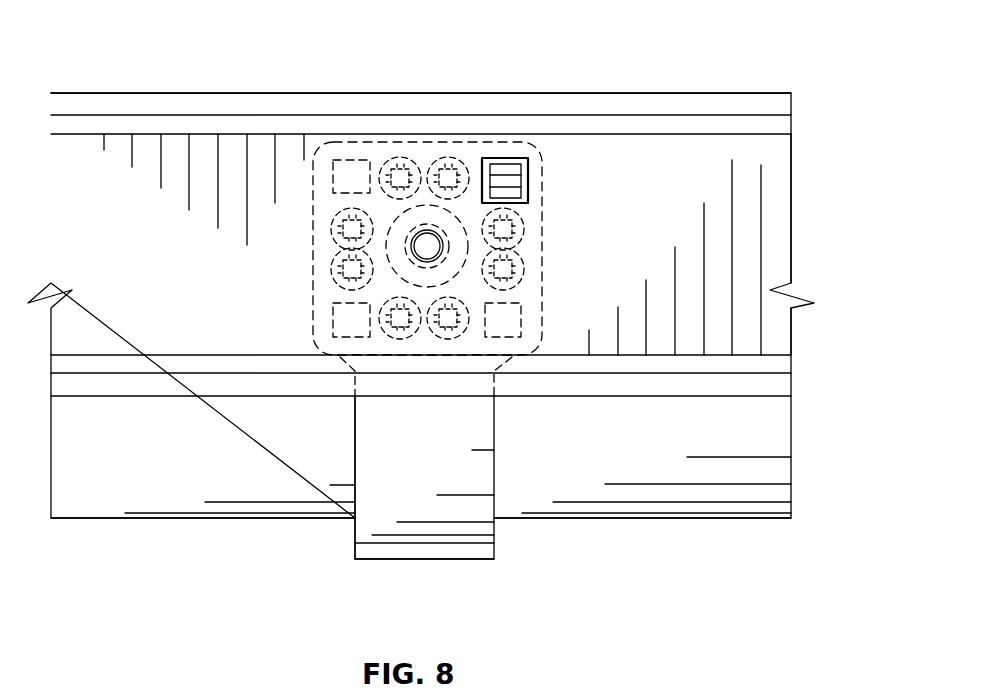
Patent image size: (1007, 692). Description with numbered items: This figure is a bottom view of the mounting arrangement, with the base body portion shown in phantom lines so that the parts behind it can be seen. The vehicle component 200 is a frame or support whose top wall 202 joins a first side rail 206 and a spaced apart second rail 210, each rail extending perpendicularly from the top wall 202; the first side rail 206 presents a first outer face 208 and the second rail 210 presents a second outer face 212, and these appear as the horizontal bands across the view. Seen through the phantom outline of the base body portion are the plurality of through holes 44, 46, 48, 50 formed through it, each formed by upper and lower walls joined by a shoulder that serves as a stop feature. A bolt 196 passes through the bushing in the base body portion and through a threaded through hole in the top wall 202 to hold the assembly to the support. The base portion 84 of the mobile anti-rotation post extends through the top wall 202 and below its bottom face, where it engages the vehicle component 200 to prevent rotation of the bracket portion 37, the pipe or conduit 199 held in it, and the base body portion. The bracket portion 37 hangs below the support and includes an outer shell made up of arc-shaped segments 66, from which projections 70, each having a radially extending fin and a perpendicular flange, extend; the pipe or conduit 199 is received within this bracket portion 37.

The vehicle component 200 is at (780, 93).
The second outer face 212 is at (683, 93).
The second rail 210 is at (782, 108).
The top wall 202 is at (792, 203).
The first side rail 206 is at (781, 375).
The first outer face 208 is at (764, 404).
The pipe or conduit 199 is at (580, 520).
The arc-shaped segments 66 is at (438, 483).
The bracket portion 37 is at (353, 534).
The projections 70 is at (412, 560).
The through hole 50 is at (350, 157).
The through hole 48 is at (332, 319).
The through hole 46 is at (521, 322).
The base portion 84 is at (529, 170).
The through hole 44 is at (525, 185).
The bolt 196 is at (427, 246).